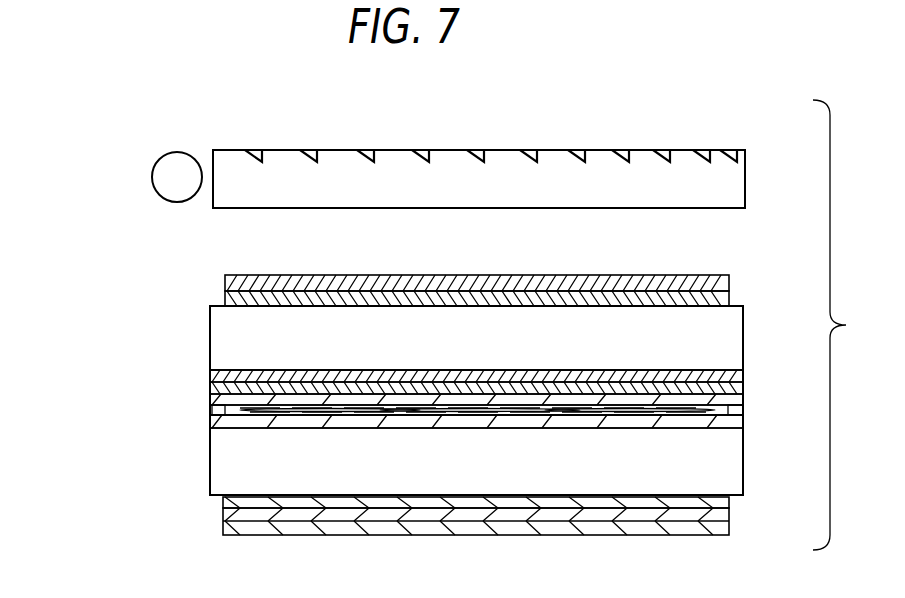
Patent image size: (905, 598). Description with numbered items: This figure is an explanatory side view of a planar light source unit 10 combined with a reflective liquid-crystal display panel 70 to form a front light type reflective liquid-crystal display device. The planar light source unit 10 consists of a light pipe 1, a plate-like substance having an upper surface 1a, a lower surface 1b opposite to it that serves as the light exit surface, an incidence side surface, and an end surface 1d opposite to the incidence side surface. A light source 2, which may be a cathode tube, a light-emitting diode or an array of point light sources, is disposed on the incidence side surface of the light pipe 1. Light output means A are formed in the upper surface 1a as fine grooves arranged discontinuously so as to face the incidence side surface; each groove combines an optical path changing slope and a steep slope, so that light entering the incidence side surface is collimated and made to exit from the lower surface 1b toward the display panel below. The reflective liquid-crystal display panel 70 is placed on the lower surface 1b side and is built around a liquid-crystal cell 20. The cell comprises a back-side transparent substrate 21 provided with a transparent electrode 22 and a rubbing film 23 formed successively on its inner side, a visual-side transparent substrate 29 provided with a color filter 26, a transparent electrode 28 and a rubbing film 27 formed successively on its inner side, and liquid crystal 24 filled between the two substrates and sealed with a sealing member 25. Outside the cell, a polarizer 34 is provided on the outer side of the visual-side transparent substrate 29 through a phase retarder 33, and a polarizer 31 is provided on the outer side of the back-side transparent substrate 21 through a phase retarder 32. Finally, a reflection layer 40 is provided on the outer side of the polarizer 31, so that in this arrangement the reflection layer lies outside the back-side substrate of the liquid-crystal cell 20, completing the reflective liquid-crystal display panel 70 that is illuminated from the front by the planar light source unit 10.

The light pipe 1 is at (480, 169).
The upper surface 1a is at (685, 150).
The lower surface 1b is at (207, 155).
The end surface 1d is at (745, 170).
The light output means A is at (308, 150).
The light source 2 is at (170, 182).
The planar light source unit 10 is at (155, 142).
The liquid-crystal cell 20 is at (100, 317).
The back-side transparent substrate 21 is at (210, 458).
The transparent electrode 22 is at (210, 421).
The rubbing film 23 is at (210, 410).
The liquid crystal 24 is at (210, 398).
The sealing member 25 is at (743, 408).
The color filter 26 is at (743, 372).
The rubbing film 27 is at (210, 386).
The transparent electrode 28 is at (210, 375).
The visual-side transparent substrate 29 is at (210, 322).
The polarizer 31 is at (225, 528).
The phase retarder 32 is at (225, 500).
The phase retarder 33 is at (225, 297).
The polarizer 34 is at (225, 283).
The reflection layer 40 is at (471, 513).
The reflective liquid-crystal display panel 70 is at (100, 297).